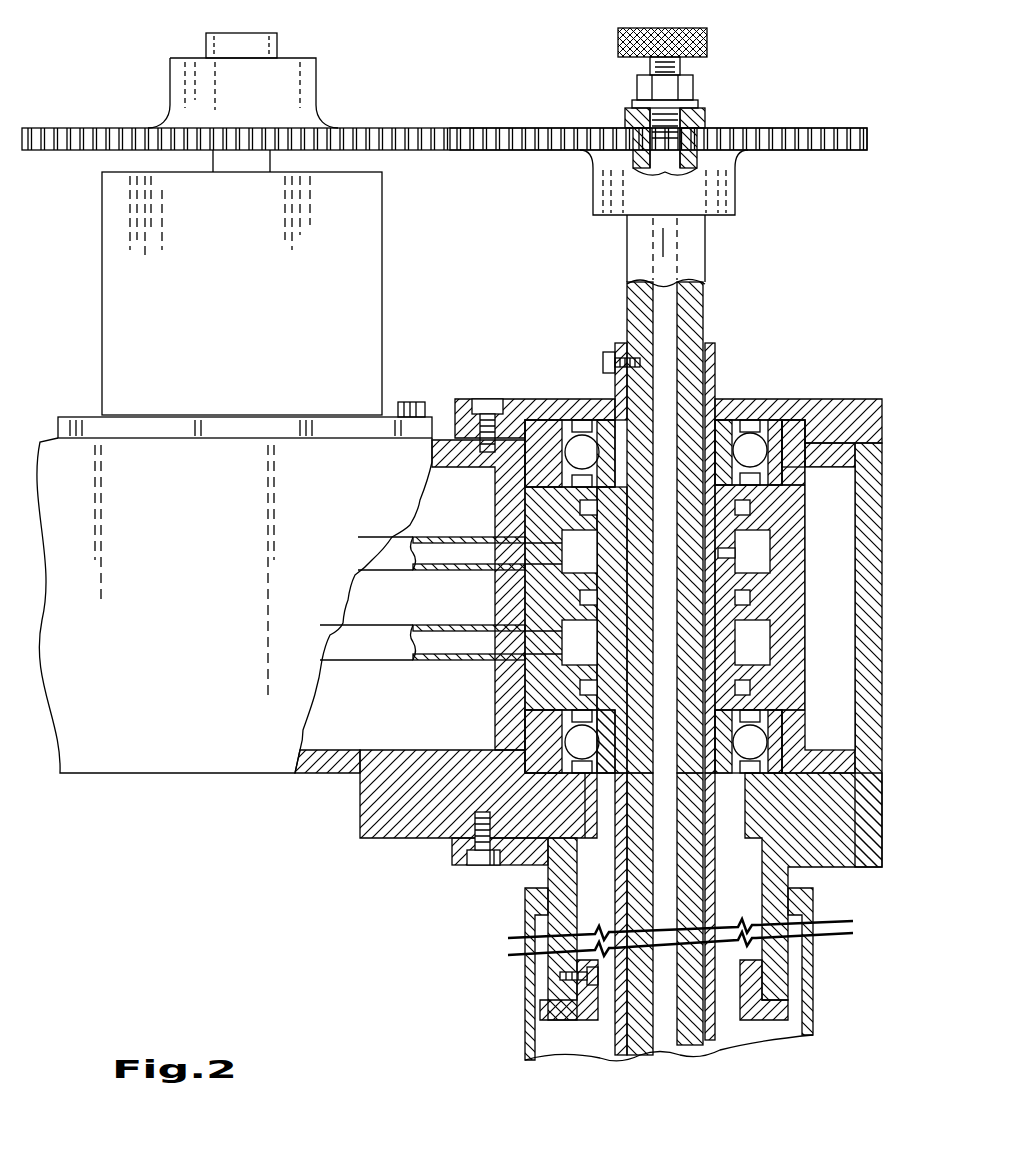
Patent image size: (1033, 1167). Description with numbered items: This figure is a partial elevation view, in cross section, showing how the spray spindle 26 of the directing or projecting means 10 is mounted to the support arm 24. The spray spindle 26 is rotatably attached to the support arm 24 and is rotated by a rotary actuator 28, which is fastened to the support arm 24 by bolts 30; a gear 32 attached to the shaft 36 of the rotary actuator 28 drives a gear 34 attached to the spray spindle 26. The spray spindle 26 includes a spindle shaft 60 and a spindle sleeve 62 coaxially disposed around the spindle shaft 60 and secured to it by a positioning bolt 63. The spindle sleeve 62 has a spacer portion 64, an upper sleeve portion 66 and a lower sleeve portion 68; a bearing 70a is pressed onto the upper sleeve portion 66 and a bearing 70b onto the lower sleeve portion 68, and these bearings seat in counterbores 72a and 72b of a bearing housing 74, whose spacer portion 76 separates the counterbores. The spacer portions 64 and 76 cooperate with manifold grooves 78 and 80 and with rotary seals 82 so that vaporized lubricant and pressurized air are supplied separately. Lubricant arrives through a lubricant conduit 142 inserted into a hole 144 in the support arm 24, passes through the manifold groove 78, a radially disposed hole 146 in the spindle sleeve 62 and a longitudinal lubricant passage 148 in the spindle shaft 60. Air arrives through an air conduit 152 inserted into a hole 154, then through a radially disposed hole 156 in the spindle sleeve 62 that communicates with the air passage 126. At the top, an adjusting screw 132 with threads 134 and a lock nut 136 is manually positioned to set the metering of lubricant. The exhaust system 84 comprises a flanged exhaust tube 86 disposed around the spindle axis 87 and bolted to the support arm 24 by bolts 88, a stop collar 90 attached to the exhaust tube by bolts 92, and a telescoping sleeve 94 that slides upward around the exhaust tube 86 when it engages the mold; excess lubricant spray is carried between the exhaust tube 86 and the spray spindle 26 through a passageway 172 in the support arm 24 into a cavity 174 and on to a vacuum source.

The directing or projecting means 10 is at (350, 906).
The support arm 24 is at (222, 590).
The spray spindle 26 is at (730, 247).
The rotary actuator 28 is at (243, 318).
The bolts 30 is at (410, 401).
The gear 32 is at (388, 127).
The gear 34 is at (512, 127).
The shaft 36 is at (278, 46).
The spindle shaft 60 is at (707, 272).
The spindle sleeve 62 is at (755, 332).
The positioning bolt 63 is at (604, 362).
The spacer portion 64 is at (738, 582).
The upper sleeve portion 66 is at (716, 352).
The lower sleeve portion 68 is at (718, 1037).
The bearing 70a is at (773, 410).
The bearing 70b is at (782, 778).
The counterbore 72a is at (800, 418).
The counterbore 72b is at (776, 742).
The bearing housing 74 is at (840, 482).
The spacer portion 76 is at (742, 692).
The manifold groove 78 is at (768, 653).
The manifold groove 80 is at (768, 541).
The rotary seals 82 is at (753, 503).
The exhaust system 84 is at (470, 1010).
The flanged exhaust tube 86 is at (452, 860).
The spindle axis 87 is at (663, 247).
The bolts 88 is at (485, 870).
The stop collar 90 is at (540, 1009).
The bolts 92 is at (553, 978).
The telescoping sleeve 94 is at (527, 1046).
The air passage 126 is at (702, 1040).
The adjusting screw 132 is at (707, 46).
The threads 134 is at (680, 70).
The lock nut 136 is at (693, 90).
The lubricant conduit 142 is at (336, 660).
The hole 144 is at (512, 648).
The radially disposed hole 146 is at (615, 628).
The lubricant passage 148 is at (628, 1052).
The air conduit 152 is at (428, 572).
The hole 154 is at (492, 548).
The radially disposed hole 156 is at (724, 554).
The passageway 172 is at (447, 758).
The cavity 174 is at (368, 737).